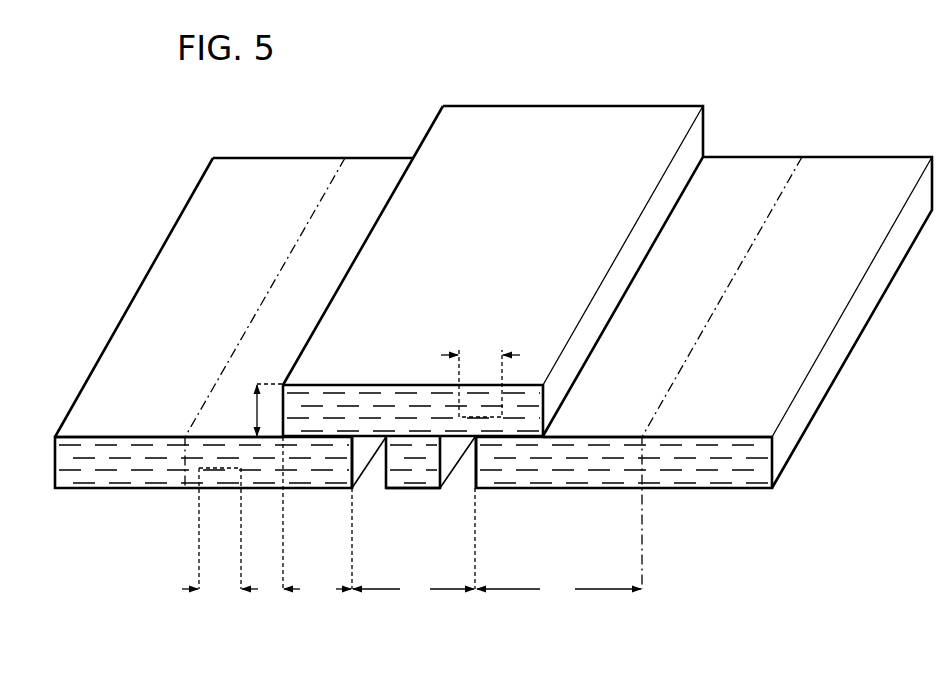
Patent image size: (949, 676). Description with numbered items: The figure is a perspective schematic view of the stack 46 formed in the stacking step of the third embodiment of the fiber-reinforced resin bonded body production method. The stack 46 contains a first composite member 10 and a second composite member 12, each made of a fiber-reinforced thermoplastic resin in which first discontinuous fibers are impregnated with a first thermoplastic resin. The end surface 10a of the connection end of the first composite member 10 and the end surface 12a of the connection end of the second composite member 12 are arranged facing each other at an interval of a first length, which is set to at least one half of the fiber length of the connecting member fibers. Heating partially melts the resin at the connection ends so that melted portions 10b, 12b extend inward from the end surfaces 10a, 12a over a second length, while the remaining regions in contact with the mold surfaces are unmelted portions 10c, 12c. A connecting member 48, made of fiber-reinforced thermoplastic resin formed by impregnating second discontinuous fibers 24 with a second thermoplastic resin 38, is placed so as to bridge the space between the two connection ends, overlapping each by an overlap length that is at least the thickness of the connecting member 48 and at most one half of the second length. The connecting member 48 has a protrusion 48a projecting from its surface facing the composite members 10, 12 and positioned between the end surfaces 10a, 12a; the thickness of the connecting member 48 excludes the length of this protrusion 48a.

The stack 46 is at (734, 81).
The first composite member 10 is at (277, 158).
The second composite member 12 is at (866, 157).
The connecting member 48 is at (518, 106).
The end surface 10a is at (362, 464).
The melted portion 10b is at (221, 443).
The unmelted portion 10c is at (145, 437).
The end surface 12a is at (471, 468).
The melted portion 12b is at (618, 437).
The unmelted portion 12c is at (737, 437).
The second discontinuous fiber 24 is at (387, 405).
The second thermoplastic resin 38 is at (418, 405).
The protrusion 48a is at (420, 488).